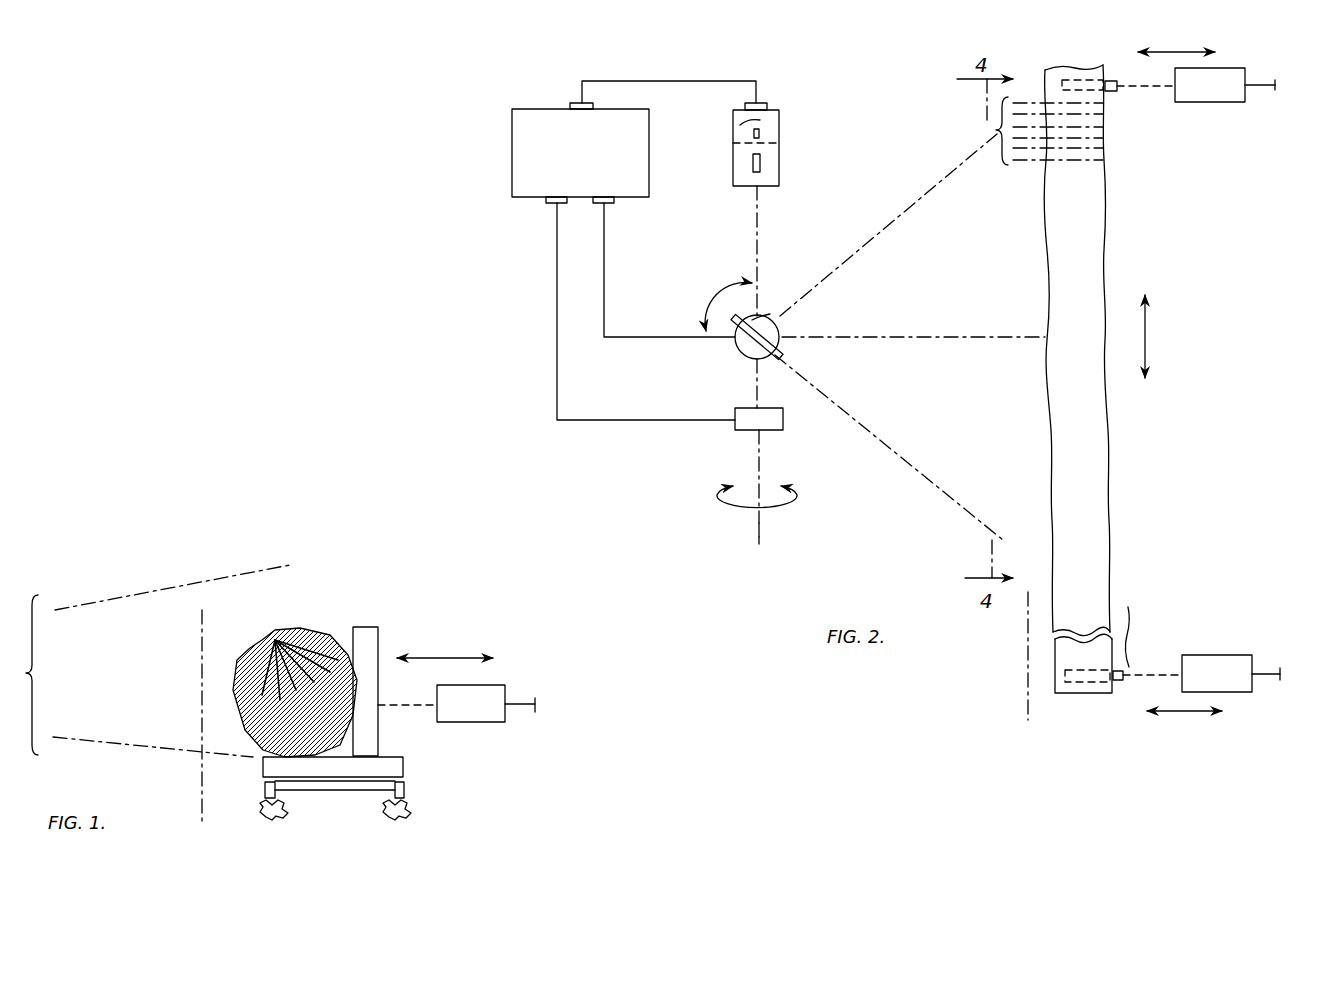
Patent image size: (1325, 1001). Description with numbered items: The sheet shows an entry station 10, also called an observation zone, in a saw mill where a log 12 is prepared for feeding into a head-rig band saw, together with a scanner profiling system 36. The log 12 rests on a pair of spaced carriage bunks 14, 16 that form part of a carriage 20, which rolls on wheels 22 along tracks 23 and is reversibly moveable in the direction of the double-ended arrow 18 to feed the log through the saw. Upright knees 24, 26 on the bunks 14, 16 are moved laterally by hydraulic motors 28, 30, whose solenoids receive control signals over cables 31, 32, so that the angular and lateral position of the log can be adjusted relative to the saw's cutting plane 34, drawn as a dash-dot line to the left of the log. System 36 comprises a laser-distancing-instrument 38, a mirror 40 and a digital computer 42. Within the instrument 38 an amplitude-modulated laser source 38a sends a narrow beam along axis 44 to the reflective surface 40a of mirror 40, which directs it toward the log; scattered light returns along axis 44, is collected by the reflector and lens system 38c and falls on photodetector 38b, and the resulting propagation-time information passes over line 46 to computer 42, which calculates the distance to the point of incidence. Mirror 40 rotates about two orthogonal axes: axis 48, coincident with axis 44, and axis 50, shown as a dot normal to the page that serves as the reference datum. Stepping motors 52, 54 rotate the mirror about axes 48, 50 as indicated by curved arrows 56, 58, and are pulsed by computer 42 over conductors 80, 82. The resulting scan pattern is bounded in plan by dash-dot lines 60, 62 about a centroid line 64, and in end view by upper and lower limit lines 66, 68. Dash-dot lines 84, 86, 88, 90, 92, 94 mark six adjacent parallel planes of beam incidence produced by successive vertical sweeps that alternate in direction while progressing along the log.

In FIG. 2, the entry station 10 is at (1170, 276).
In FIG. 1, the entry station 10 is at (366, 579).
In FIG. 2, the log 12 is at (1105, 251).
In FIG. 1, the log 12 is at (293, 630).
In FIG. 2, the carriage bunk 14 is at (1087, 78).
In FIG. 2, the carriage bunk 16 is at (1082, 682).
In FIG. 1, the carriage bunk 16 is at (403, 765).
In FIG. 2, the double-ended arrow 18 is at (1145, 342).
In FIG. 1, the carriage 20 is at (334, 786).
In FIG. 1, the wheels 22 is at (265, 788).
In FIG. 1, the tracks 23 is at (380, 814).
In FIG. 2, the knee 24 is at (1110, 81).
In FIG. 2, the knee 26 is at (1118, 681).
In FIG. 1, the knee 26 is at (378, 631).
In FIG. 2, the hydraulic motor 28 is at (1233, 68).
In FIG. 2, the hydraulic motor 30 is at (1213, 655).
In FIG. 1, the hydraulic motor 30 is at (470, 722).
In FIG. 2, the cable of conductors 31 is at (1262, 90).
In FIG. 2, the cable of conductors 32 is at (1268, 681).
In FIG. 1, the cable of conductors 32 is at (518, 707).
In FIG. 2, the cutting plane 34 is at (1028, 697).
In FIG. 1, the cutting plane 34 is at (202, 630).
In FIG. 2, the scanner profiling system 36 is at (858, 117).
In FIG. 2, the laser-distancing-instrument 38 is at (728, 172).
In FIG. 2, the amplitude-modulated laser source 38a is at (760, 164).
In FIG. 2, the photodetector 38b is at (760, 134).
In FIG. 2, the reflector and lens system 38c is at (745, 125).
In FIG. 2, the mirror 40 is at (773, 364).
In FIG. 2, the reflective surface 40a is at (787, 350).
In FIG. 2, the digital computer 42 is at (508, 162).
In FIG. 2, the axis 44 is at (756, 231).
In FIG. 2, the line 46 is at (650, 81).
In FIG. 2, the axis 48 is at (759, 528).
In FIG. 2, the axis 50 is at (778, 330).
In FIG. 2, the stepping motor 52 is at (782, 431).
In FIG. 2, the stepping motor 54 is at (770, 313).
In FIG. 2, the double-headed curved arrow 56 is at (782, 509).
In FIG. 2, the double-headed curved arrow 58 is at (704, 294).
In FIG. 2, the outer scan limit line 60 is at (868, 240).
In FIG. 2, the outer scan limit line 62 is at (878, 437).
In FIG. 2, the centroid line 64 is at (898, 337).
In FIG. 1, the upper scan limit line 66 is at (155, 590).
In FIG. 1, the lower scan limit line 68 is at (172, 748).
In FIG. 2, the conductor line 80 is at (628, 420).
In FIG. 2, the conductor line 82 is at (630, 338).
In FIG. 2, the scanning plane 84 is at (1105, 103).
In FIG. 2, the scanning plane 86 is at (1105, 114).
In FIG. 2, the scanning plane 88 is at (1105, 127).
In FIG. 2, the scanning plane 90 is at (1105, 138).
In FIG. 2, the scan line 92 is at (1105, 148).
In FIG. 2, the scanning plane 94 is at (1108, 160).